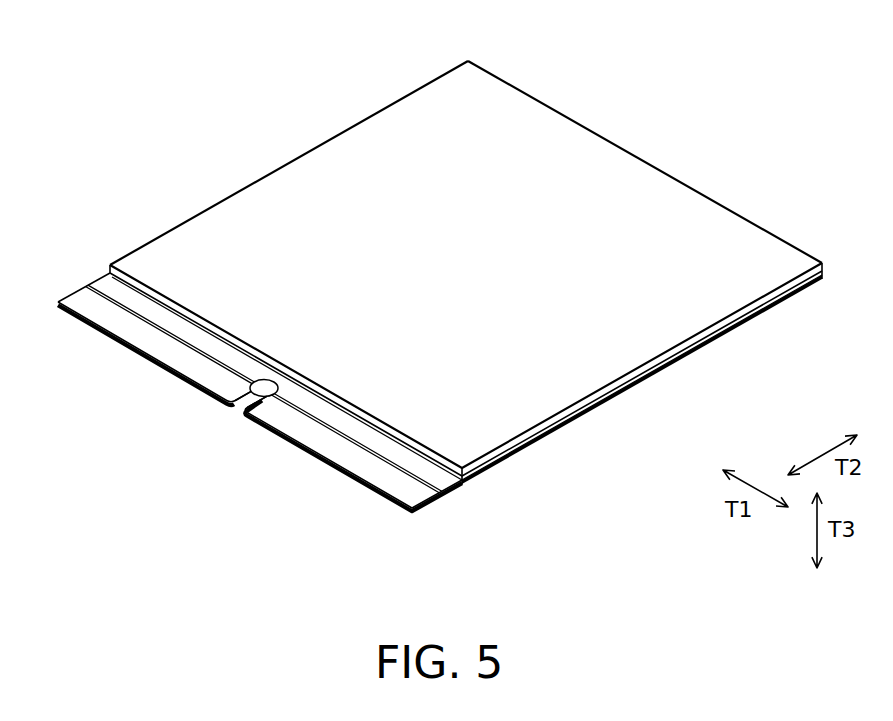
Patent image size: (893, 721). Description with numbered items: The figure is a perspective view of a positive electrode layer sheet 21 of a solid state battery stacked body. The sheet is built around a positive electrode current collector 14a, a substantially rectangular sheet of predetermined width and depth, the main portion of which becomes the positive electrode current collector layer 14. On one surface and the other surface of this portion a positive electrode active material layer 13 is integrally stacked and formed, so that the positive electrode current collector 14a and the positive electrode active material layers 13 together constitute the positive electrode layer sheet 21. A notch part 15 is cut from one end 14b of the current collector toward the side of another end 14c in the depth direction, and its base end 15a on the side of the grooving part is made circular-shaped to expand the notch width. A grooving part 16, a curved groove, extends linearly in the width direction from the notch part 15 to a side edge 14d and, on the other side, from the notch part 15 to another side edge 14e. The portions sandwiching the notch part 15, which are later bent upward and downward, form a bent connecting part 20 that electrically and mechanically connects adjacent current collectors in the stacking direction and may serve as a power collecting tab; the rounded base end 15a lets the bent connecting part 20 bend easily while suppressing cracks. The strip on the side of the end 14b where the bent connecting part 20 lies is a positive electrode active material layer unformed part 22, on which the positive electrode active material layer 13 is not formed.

The positive electrode active material layer 13 is at (560, 138).
The positive electrode current collector layer 14 is at (423, 329).
The positive electrode current collector 14a is at (432, 508).
The end 14b is at (355, 478).
The another end 14c is at (677, 180).
The side edge 14d is at (574, 422).
The another side edge 14e is at (265, 176).
The notch part 15 is at (230, 407).
The base end 15a is at (276, 377).
The grooving part 16 is at (160, 330).
The bent connecting part 20 is at (112, 320).
The positive electrode layer sheet 21 is at (668, 104).
The positive electrode active material layer unformed part 22 is at (83, 283).